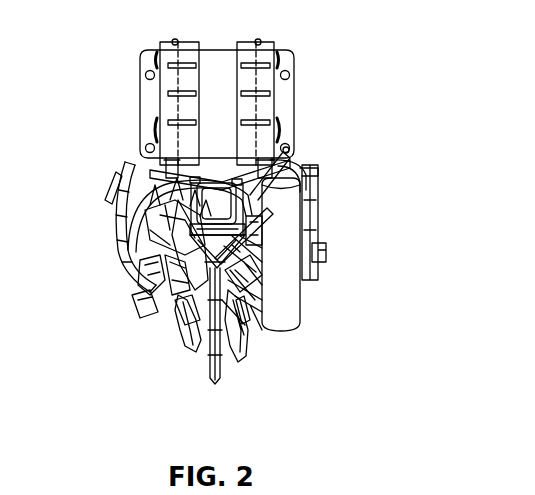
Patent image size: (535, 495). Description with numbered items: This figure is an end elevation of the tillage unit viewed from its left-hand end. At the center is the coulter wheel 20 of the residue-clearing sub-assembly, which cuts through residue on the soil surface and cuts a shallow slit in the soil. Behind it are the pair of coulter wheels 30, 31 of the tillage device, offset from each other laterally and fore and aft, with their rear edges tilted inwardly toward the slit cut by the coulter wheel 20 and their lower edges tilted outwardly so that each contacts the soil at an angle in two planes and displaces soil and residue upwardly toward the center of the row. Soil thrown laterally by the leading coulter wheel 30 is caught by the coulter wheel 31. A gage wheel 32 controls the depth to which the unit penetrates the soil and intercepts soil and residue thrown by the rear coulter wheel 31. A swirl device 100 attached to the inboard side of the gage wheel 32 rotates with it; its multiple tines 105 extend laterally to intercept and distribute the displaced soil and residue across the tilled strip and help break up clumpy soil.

The coulter wheel 20 is at (213, 376).
The coulter wheel 30 is at (241, 347).
The coulter wheel 31 is at (178, 335).
The gage wheel 32 is at (283, 331).
The swirl device 100 is at (268, 221).
The tines 105 is at (292, 164).